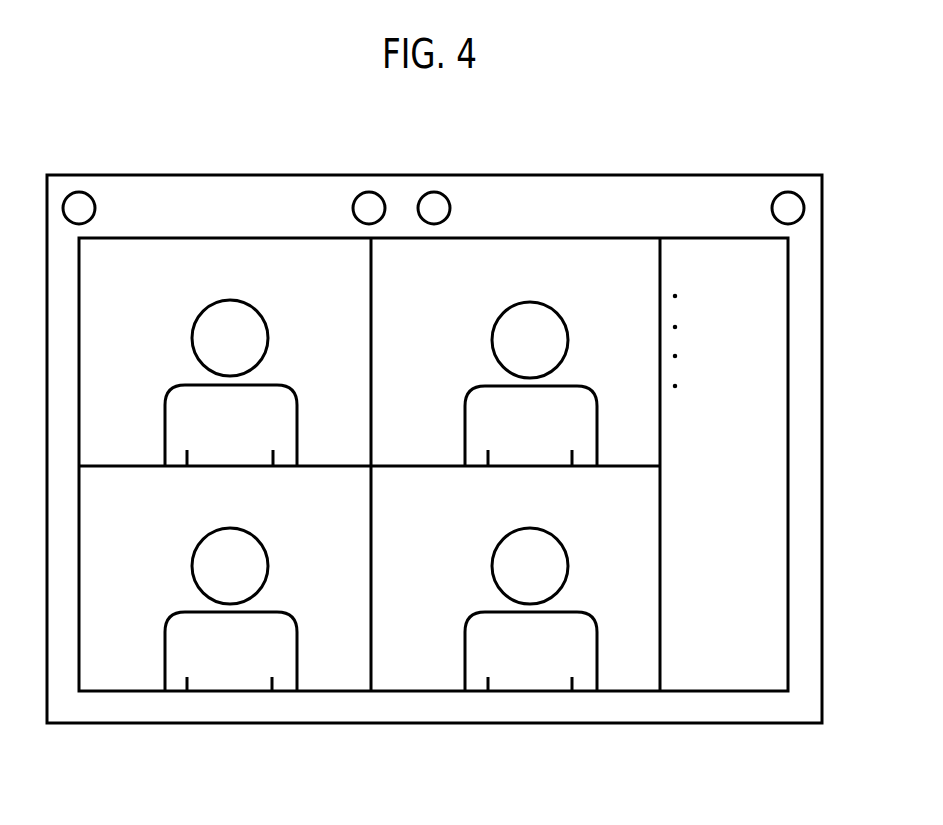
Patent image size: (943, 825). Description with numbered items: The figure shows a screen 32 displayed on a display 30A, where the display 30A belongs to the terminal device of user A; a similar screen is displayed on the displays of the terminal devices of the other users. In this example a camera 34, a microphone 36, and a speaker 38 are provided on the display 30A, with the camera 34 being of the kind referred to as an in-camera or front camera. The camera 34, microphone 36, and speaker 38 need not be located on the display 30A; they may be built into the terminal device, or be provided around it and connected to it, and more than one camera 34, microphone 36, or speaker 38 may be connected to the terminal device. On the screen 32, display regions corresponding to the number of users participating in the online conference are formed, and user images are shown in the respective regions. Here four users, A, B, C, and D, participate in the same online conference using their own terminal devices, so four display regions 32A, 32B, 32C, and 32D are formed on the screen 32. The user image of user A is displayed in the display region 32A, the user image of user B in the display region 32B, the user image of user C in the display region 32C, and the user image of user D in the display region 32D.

The display 30A is at (168, 174).
The screen 32 is at (556, 238).
The display region 32A is at (162, 290).
The display region 32B is at (451, 290).
The display region 32C is at (161, 516).
The display region 32D is at (451, 516).
The camera 34 is at (432, 191).
The microphone 36 is at (367, 191).
The speaker 38 is at (80, 191).